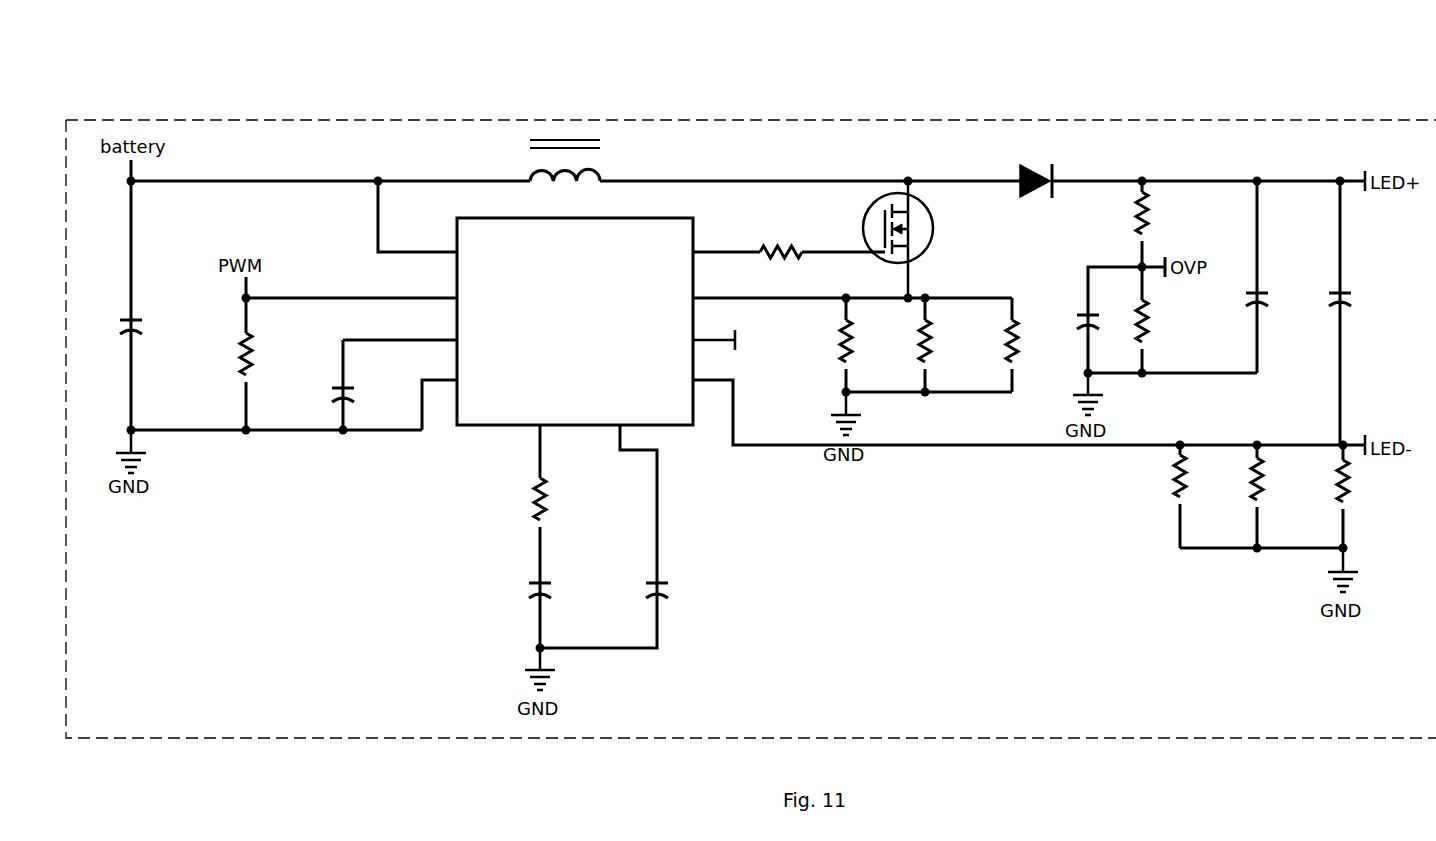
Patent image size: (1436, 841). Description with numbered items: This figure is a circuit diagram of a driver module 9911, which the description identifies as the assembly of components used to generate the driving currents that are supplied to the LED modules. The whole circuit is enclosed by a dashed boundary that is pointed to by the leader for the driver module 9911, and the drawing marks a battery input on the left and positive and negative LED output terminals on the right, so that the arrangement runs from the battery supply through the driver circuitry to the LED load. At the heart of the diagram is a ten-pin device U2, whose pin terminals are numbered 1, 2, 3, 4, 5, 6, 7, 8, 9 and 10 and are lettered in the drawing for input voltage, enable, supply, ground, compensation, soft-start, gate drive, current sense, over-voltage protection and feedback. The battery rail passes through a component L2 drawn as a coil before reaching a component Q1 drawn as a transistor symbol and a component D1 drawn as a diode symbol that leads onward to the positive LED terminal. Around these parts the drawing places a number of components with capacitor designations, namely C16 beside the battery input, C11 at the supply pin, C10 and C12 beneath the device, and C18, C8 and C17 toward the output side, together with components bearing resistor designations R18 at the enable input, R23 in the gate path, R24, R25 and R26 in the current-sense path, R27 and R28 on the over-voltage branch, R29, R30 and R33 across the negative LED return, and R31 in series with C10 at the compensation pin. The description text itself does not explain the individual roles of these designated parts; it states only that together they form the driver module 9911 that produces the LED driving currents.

The driver module 9911 is at (732, 120).
The inductor L2 is at (549, 160).
The LED driver IC U2 is at (575, 307).
The MOSFET transistor Q1 is at (922, 239).
The diode SF36 D1 is at (1029, 183).
The capacitor C16 is at (157, 305).
The capacitor C11 is at (368, 385).
The capacitor C18 is at (1087, 320).
The capacitor C8 is at (1277, 277).
The capacitor C17 is at (1367, 313).
The capacitor C10 is at (567, 615).
The capacitor C12 is at (630, 615).
The resistor R18 is at (268, 364).
The resistor R23 is at (818, 232).
The resistor R24 is at (866, 345).
The resistor R25 is at (946, 345).
The resistor R26 is at (1034, 345).
The resistor R27 is at (1165, 224).
The resistor R28 is at (1165, 320).
The resistor R29 is at (1202, 496).
The resistor R30 is at (1280, 496).
The resistor R33 is at (1368, 496).
The resistor R31 is at (562, 530).
The pin 1 EN 1 is at (351, 287).
The pin 2 SS 2 is at (627, 504).
The pin 3 OVP 3 is at (735, 334).
The pin 4 COMP 4 is at (529, 451).
The pin 5 GND 5 is at (439, 394).
The pin 6 FB 6 is at (936, 401).
The pin 7 CS 7 is at (769, 287).
The pin 8 GATE 8 is at (726, 241).
The pin 9 VCC 9 is at (400, 329).
The pin 10 VIN 10 is at (417, 216).